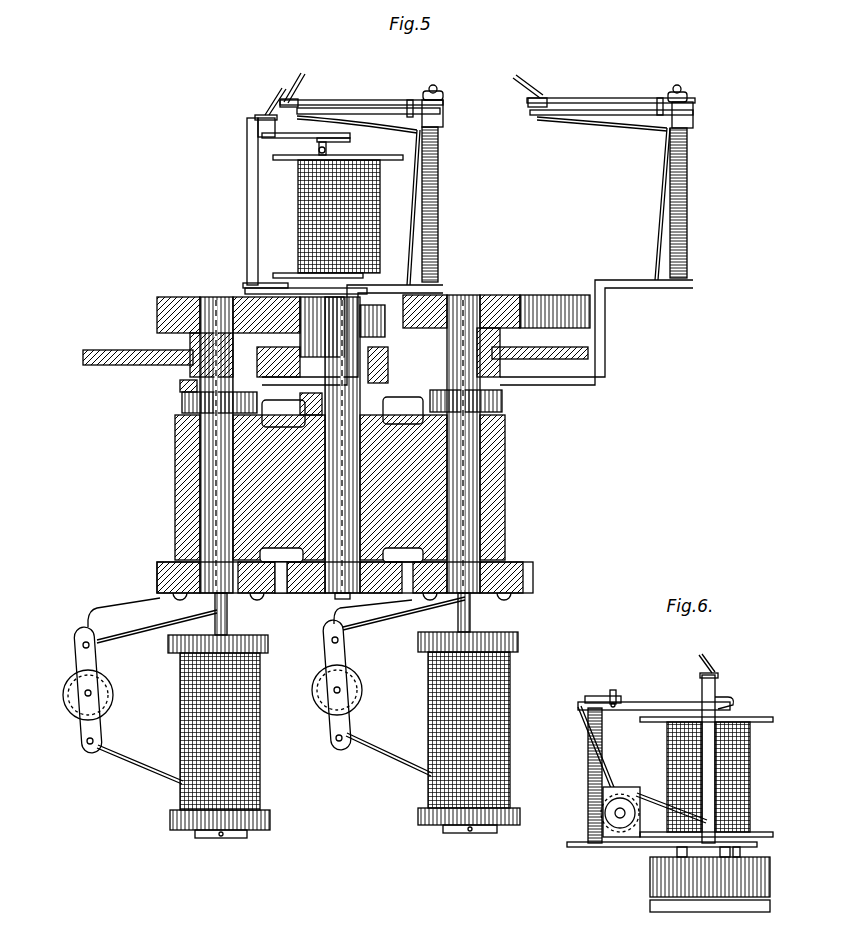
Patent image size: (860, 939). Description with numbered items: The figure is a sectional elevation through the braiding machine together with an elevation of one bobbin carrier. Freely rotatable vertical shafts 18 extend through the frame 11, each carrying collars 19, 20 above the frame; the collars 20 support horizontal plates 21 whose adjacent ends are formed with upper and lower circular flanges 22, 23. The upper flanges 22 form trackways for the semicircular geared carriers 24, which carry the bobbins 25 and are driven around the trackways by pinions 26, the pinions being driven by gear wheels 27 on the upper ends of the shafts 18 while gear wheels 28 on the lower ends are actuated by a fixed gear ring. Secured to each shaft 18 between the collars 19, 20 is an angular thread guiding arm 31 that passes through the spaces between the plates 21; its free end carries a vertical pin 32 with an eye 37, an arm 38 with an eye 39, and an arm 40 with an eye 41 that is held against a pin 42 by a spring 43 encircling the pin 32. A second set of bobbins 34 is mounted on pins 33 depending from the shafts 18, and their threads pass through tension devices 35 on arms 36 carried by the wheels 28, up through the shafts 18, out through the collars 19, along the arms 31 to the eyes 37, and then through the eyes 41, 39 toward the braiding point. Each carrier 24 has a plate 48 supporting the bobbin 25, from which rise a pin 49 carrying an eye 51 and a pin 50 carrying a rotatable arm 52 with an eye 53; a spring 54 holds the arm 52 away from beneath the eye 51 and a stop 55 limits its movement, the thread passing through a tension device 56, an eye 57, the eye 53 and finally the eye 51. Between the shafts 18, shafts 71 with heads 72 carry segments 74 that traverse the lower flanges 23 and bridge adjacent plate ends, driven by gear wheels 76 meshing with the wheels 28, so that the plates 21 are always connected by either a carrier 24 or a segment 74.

In FIG. 5, the frame 11 is at (175, 505).
In FIG. 5, the vertical shafts 18 is at (210, 470).
In FIG. 5, the collar 19 is at (182, 403).
In FIG. 5, the collar 20 is at (190, 372).
In FIG. 5, the plates 21 is at (90, 350).
In FIG. 5, the upper circular flanges 22 is at (378, 297).
In FIG. 5, the lower circular flanges 23 is at (390, 392).
In FIG. 5, the semicircular carriers 24 is at (245, 292).
In FIG. 6, the semicircular carriers 24 is at (650, 895).
In FIG. 5, the bobbins 25 is at (298, 212).
In FIG. 6, the bobbins 25 is at (750, 780).
In FIG. 5, the pinions 26 is at (575, 295).
In FIG. 5, the gear wheels 27 is at (157, 305).
In FIG. 5, the gear wheels 28 is at (157, 578).
In FIG. 5, the angular thread guiding arm 31 is at (180, 386).
In FIG. 5, the pin 32 is at (438, 92).
In FIG. 5, the pins 33 is at (227, 612).
In FIG. 5, the bobbins 34 is at (268, 787).
In FIG. 5, the tension devices 35 is at (68, 700).
In FIG. 5, the arms 36 is at (80, 663).
In FIG. 5, the eyes 37 is at (415, 135).
In FIG. 5, the arms 38 is at (368, 99).
In FIG. 5, the thread-guiding eyes 39 is at (283, 98).
In FIG. 5, the arms 40 is at (385, 108).
In FIG. 5, the thread-guiding eyes 41 is at (322, 115).
In FIG. 5, the pins 42 is at (410, 100).
In FIG. 5, the springs 43 is at (440, 192).
In FIG. 5, the plates 48 is at (262, 282).
In FIG. 6, the plates 48 is at (655, 847).
In FIG. 5, the pin 49 is at (247, 160).
In FIG. 6, the pin 49 is at (702, 735).
In FIG. 6, the pin 50 is at (590, 696).
In FIG. 5, the thread guiding eye 51 is at (262, 114).
In FIG. 6, the thread guiding eye 51 is at (714, 672).
In FIG. 5, the arm 52 is at (318, 145).
In FIG. 6, the arm 52 is at (655, 702).
In FIG. 6, the thread-guiding eye 53 is at (730, 697).
In FIG. 6, the spring 54 is at (588, 800).
In FIG. 6, the stop 55 is at (613, 690).
In FIG. 6, the tension device 56 is at (612, 830).
In FIG. 6, the eye 57 is at (575, 708).
In FIG. 5, the shafts 71 is at (333, 595).
In FIG. 5, the heads 72 is at (324, 404).
In FIG. 5, the segments 74 is at (403, 410).
In FIG. 5, the gear wheels 76 is at (283, 594).